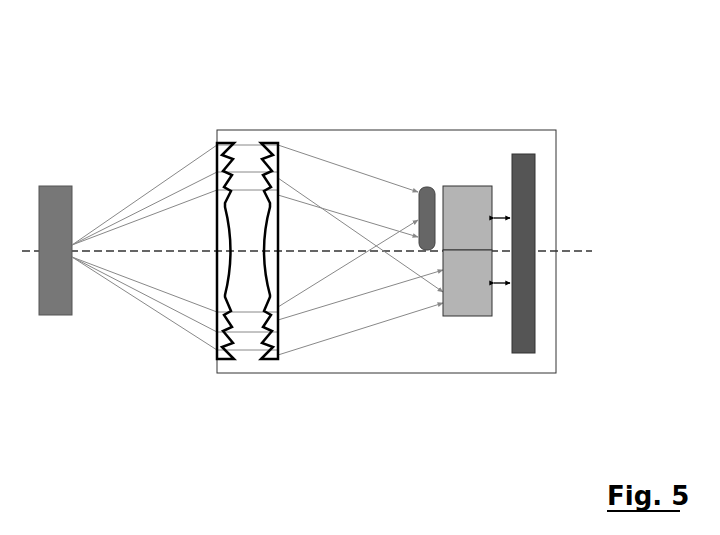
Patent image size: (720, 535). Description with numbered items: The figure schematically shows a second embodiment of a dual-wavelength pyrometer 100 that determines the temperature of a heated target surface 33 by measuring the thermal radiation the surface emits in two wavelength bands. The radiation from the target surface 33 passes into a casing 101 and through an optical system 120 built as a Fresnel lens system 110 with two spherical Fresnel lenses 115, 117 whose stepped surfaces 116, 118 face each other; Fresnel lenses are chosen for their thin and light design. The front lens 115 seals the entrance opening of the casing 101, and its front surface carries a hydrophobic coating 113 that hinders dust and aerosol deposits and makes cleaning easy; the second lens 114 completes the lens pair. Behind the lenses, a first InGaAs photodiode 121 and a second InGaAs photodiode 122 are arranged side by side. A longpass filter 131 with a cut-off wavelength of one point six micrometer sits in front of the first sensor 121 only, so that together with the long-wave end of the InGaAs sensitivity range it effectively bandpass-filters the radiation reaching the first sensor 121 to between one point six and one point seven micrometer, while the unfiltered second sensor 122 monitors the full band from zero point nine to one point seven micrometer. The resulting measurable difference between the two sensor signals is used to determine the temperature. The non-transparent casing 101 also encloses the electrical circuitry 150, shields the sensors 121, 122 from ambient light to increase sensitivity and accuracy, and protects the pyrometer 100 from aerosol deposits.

The dual-wavelength pyrometer 100 is at (542, 88).
The casing 101 is at (313, 375).
The lens assembly 110 is at (204, 261).
The hydrophobic coating 113 is at (213, 345).
The second lens element 114 is at (269, 251).
The Fresnel lens 115 is at (221, 141).
The stepped surface 116 is at (226, 347).
The Fresnel lens 117 is at (271, 141).
The stepped surface 118 is at (259, 359).
The optical system 120 is at (456, 269).
The first InGaAs photodiode 121 is at (466, 186).
The second InGaAs photodiode 122 is at (468, 320).
The longpass filter 131 is at (423, 183).
The electrical circuitry 150 is at (527, 357).
The target surface 33 is at (76, 211).